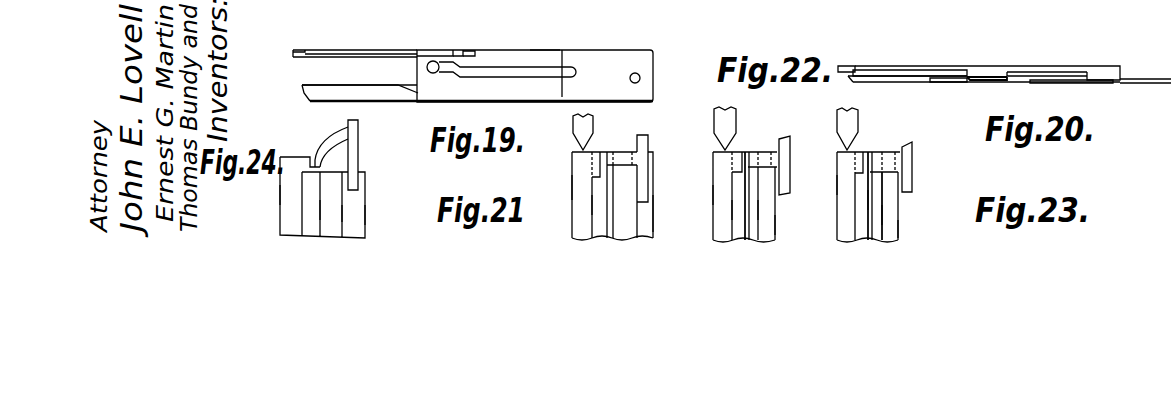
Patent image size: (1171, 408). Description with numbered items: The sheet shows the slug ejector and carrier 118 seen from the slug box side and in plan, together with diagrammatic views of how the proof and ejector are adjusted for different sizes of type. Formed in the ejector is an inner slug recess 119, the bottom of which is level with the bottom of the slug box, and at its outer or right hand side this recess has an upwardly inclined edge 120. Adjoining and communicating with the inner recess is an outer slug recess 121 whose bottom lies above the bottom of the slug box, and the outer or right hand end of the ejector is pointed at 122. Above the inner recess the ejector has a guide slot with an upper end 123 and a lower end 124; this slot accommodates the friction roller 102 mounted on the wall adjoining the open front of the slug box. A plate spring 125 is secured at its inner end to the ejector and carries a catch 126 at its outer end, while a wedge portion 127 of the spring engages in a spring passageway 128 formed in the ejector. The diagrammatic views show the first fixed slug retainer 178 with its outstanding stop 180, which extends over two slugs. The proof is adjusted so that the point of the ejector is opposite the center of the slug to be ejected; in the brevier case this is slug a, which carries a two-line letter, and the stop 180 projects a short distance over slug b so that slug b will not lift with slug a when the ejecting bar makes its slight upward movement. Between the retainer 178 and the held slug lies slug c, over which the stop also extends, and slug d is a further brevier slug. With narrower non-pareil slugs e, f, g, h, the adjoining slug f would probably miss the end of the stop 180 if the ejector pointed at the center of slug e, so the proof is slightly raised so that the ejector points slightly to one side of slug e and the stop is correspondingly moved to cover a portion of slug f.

In FIG. 19, the friction roller 102 is at (433, 67).
In FIG. 19, the slug ejector and carrier 118 is at (481, 76).
In FIG. 20, the slug ejector and carrier 118 is at (1143, 83).
In FIG. 19, the inner slug recess 119 is at (540, 58).
In FIG. 20, the inner slug recess 119 is at (1008, 83).
In FIG. 19, the upwardly inclined edge 120 is at (410, 92).
In FIG. 20, the upwardly inclined edge 120 is at (948, 82).
In FIG. 19, the outer slug recess 121 is at (359, 75).
In FIG. 19, the pointed end of ejector 122 is at (302, 87).
In FIG. 20, the pointed end of ejector 122 is at (850, 82).
In FIG. 21, the pointed end of ejector 122 is at (575, 128).
In FIG. 22, the pointed end of ejector 122 is at (736, 120).
In FIG. 23, the pointed end of ejector 122 is at (858, 130).
In FIG. 19, the upper end of guide slot 123 is at (457, 51).
In FIG. 19, the lower end of guide slot 124 is at (563, 72).
In FIG. 19, the plate spring 125 is at (365, 50).
In FIG. 20, the plate spring 125 is at (913, 66).
In FIG. 19, the catch 126 is at (294, 50).
In FIG. 20, the catch 126 is at (847, 66).
In FIG. 19, the wedge portion 127 is at (427, 51).
In FIG. 20, the wedge portion 127 is at (985, 66).
In FIG. 19, the spring passageway 128 is at (474, 52).
In FIG. 20, the spring passageway 128 is at (1033, 83).
In FIG. 21, the first fixed slug retainer 178 is at (650, 145).
In FIG. 22, the first fixed slug retainer 178 is at (785, 155).
In FIG. 23, the first fixed slug retainer 178 is at (912, 165).
In FIG. 24, the first fixed slug retainer 178 is at (358, 143).
In FIG. 21, the stop 180 is at (608, 148).
In FIG. 22, the stop 180 is at (750, 152).
In FIG. 23, the stop 180 is at (875, 152).
In FIG. 24, the stop 180 is at (335, 155).
In FIG. 21, the brevier slug to be ejected a is at (582, 175).
In FIG. 24, the brevier slug to be ejected a is at (295, 193).
In FIG. 21, the adjoining brevier slug b is at (593, 202).
In FIG. 24, the adjoining brevier slug b is at (312, 210).
In FIG. 21, the brevier slug c is at (625, 208).
In FIG. 24, the brevier slug c is at (332, 213).
In FIG. 21, the brevier slug d is at (642, 223).
In FIG. 24, the brevier slug d is at (353, 215).
In FIG. 22, the non-pareil slug to be ejected e is at (720, 195).
In FIG. 23, the non-pareil slug to be ejected e is at (845, 180).
In FIG. 22, the adjoining non-pareil slug f is at (742, 212).
In FIG. 23, the adjoining non-pareil slug f is at (860, 202).
In FIG. 22, the non-pareil slug g is at (752, 215).
In FIG. 23, the non-pareil slug g is at (868, 220).
In FIG. 22, the non-pareil slug h is at (763, 228).
In FIG. 23, the non-pareil slug h is at (888, 233).